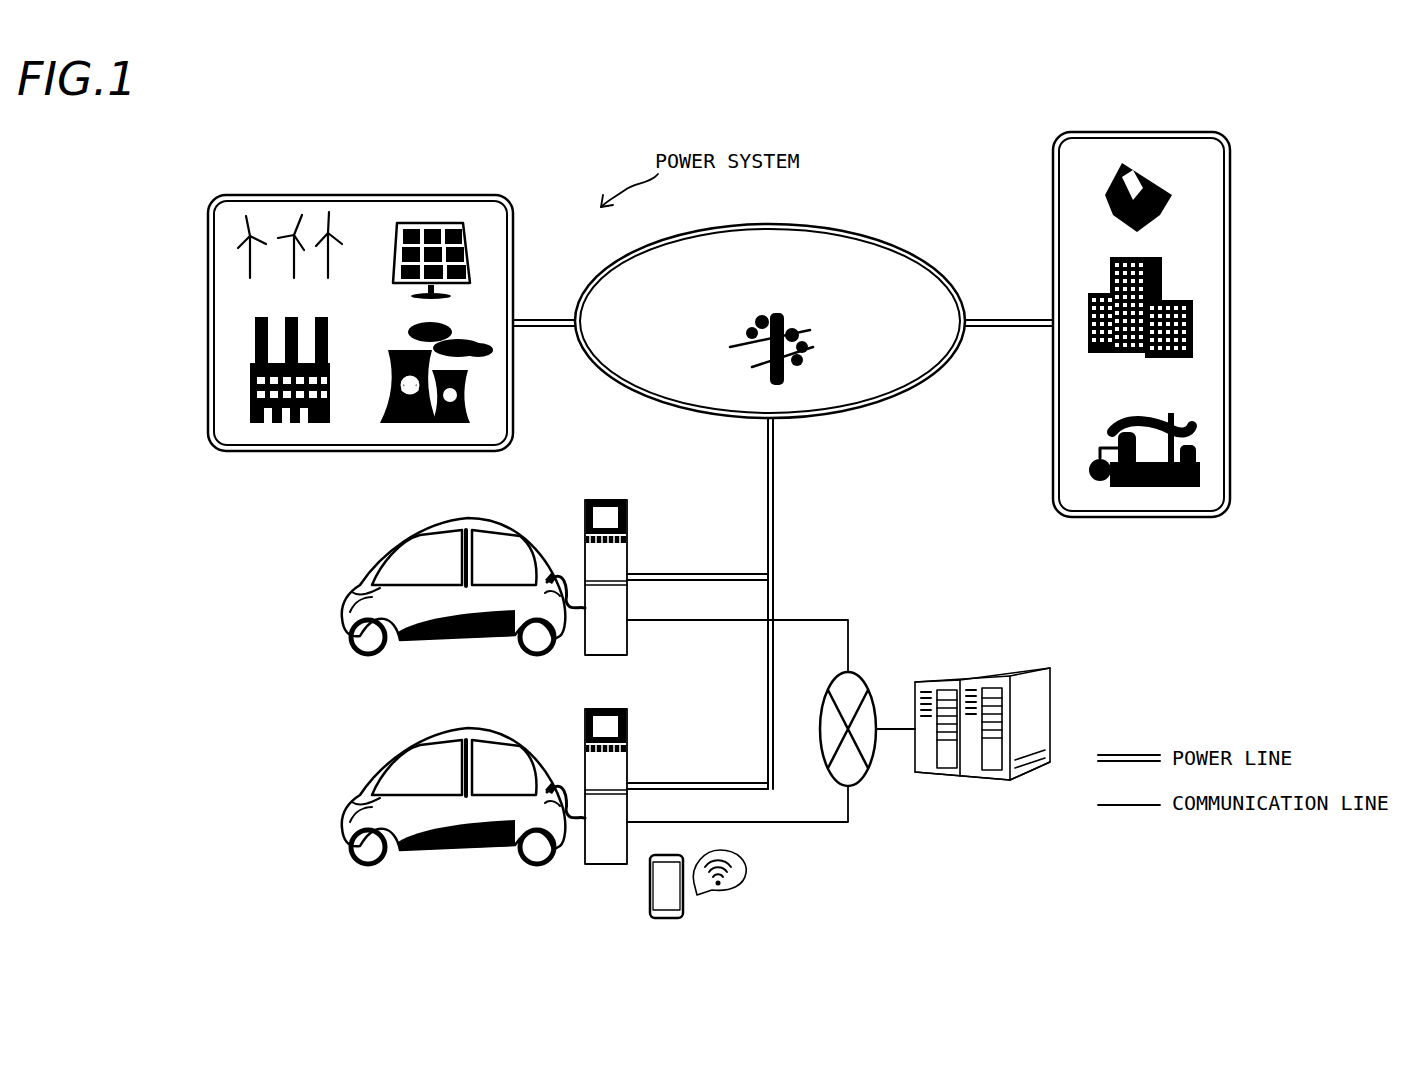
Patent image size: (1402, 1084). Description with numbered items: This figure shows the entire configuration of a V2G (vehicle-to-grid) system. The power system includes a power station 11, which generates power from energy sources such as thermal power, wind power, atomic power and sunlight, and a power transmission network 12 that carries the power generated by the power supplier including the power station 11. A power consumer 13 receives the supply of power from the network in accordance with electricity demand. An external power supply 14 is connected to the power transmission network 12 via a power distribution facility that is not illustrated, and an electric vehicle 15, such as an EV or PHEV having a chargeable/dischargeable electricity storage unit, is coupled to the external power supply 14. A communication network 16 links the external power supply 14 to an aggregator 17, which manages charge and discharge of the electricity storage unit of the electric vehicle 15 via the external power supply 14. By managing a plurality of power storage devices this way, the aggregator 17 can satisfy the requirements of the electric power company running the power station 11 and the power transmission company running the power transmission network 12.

The power station 11 is at (360, 308).
The power transmission network 12 is at (770, 321).
The power consumer 13 is at (1145, 310).
The external power supply 14 is at (627, 518).
The electric vehicle 15 is at (381, 553).
The communication network 16 is at (860, 785).
The aggregator 17 is at (983, 714).